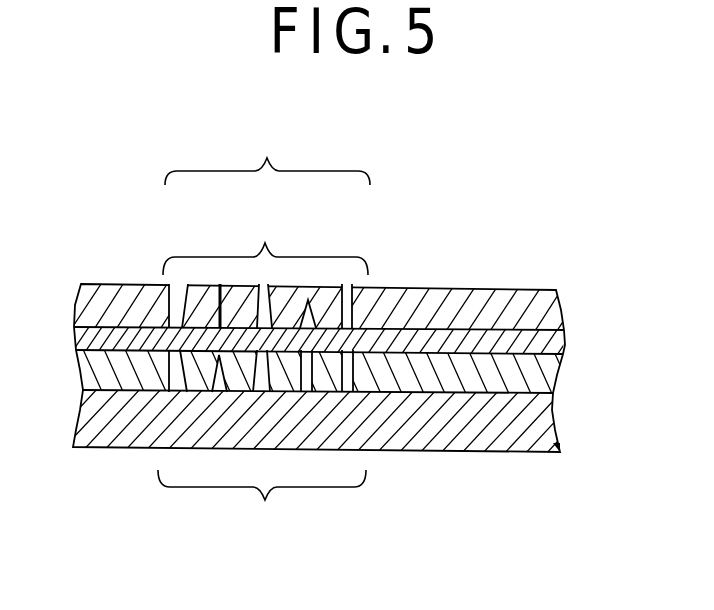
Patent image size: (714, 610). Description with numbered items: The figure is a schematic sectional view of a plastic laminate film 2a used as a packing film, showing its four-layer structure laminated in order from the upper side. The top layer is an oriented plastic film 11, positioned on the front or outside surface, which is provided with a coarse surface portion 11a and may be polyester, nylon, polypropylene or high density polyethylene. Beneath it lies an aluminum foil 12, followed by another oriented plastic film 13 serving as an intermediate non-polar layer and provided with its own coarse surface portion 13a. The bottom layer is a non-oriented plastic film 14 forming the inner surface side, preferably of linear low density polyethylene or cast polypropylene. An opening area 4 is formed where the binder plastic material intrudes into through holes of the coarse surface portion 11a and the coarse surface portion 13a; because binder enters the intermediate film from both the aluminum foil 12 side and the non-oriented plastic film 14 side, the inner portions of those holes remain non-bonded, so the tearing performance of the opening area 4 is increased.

The plastic laminate film 2a is at (103, 280).
The opening area 4 is at (267, 151).
The oriented plastic film 11 is at (472, 290).
The coarse surface portion 11a is at (265, 238).
The aluminum foil 12 is at (562, 345).
The oriented plastic film 13 is at (545, 382).
The coarse surface portion 13a is at (262, 510).
The non-oriented plastic film 14 is at (542, 434).